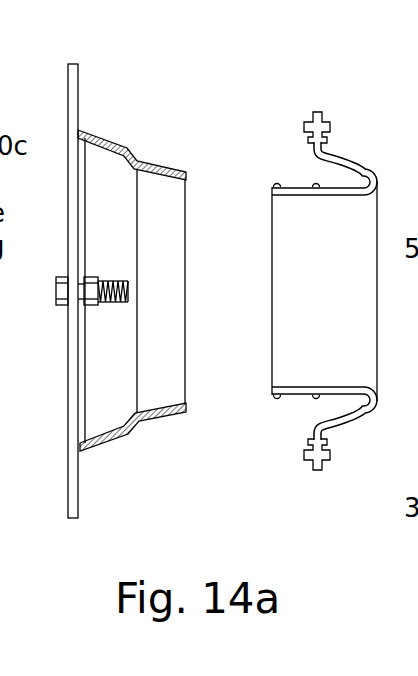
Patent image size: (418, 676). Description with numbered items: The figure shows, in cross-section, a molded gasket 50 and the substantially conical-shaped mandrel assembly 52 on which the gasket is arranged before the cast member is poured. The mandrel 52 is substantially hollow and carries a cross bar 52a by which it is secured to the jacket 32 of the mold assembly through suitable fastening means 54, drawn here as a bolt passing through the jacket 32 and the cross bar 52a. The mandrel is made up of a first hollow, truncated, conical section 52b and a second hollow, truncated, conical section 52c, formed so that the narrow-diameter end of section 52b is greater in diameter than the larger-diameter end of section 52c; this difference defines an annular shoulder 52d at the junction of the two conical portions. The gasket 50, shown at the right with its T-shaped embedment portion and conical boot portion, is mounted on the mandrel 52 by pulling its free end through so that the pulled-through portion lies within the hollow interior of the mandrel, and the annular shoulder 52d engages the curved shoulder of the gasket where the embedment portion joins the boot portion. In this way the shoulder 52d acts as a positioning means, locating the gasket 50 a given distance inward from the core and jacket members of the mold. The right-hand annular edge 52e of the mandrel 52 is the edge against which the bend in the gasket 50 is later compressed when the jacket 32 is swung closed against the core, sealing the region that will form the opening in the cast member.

The jacket 32 is at (67, 477).
The gasket 50 is at (346, 458).
The mandrel assembly 52 is at (144, 298).
The cross bar 52a is at (85, 358).
The first hollow truncated conical section 52b is at (110, 444).
The second hollow truncated conical section 52c is at (163, 167).
The annular shoulder 52d is at (143, 150).
The right-hand annular edge 52e is at (187, 172).
The fastening means 54 is at (62, 308).